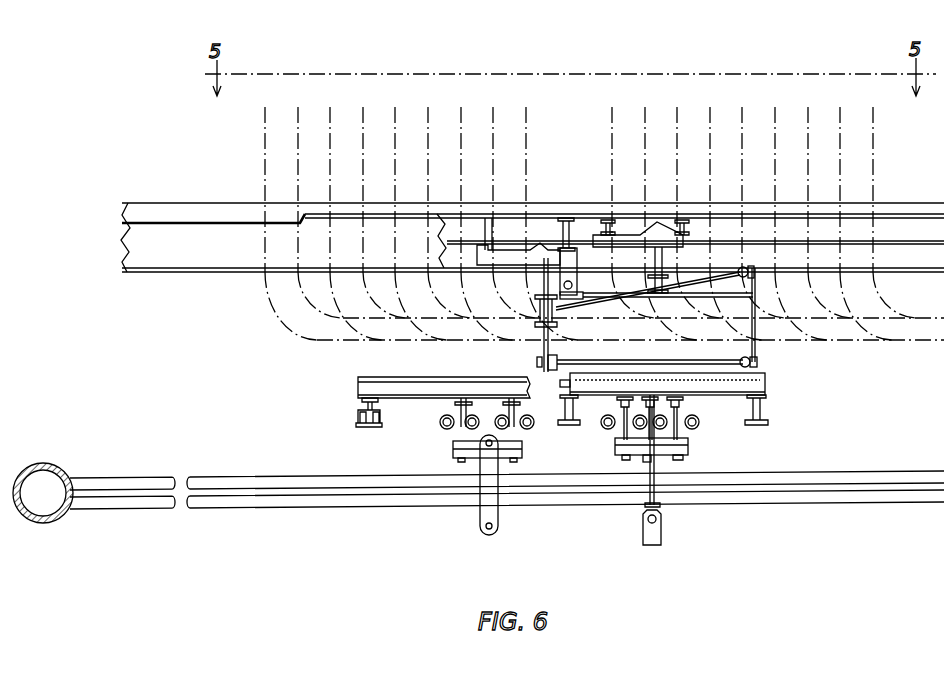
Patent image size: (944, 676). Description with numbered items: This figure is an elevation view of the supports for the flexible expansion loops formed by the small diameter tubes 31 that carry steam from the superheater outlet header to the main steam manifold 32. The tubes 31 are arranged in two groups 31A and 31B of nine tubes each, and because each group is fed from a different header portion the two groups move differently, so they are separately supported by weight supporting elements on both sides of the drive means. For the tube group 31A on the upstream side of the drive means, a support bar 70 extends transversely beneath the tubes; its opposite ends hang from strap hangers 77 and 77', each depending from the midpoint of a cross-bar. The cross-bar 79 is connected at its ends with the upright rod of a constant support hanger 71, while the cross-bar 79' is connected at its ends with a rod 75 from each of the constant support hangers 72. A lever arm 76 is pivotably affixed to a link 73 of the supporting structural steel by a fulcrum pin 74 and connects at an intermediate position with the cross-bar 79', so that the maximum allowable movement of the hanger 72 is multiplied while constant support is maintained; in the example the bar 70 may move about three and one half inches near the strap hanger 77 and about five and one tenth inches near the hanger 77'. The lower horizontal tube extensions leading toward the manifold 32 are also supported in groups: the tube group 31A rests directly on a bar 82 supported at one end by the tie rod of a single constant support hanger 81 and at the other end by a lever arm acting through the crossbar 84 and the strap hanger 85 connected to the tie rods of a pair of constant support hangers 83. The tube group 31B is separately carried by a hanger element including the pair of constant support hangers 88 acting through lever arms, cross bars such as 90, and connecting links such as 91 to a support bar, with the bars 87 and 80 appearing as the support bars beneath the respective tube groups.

The tubes 31 is at (147, 510).
The tube group 31A is at (255, 104).
The tube group 31B is at (885, 107).
The main steam manifold 32 is at (68, 470).
The support bar 70 is at (637, 358).
The constant support hanger 71 is at (486, 265).
The constant support hangers 72 is at (679, 240).
The link 73 is at (577, 263).
The fulcrum pin 74 is at (583, 298).
The rod 75 is at (655, 260).
The lever arm 76 is at (722, 287).
The strap hanger 77 is at (528, 358).
The strap hanger 77' is at (768, 353).
The cross-bar 79 is at (637, 315).
The cross-bar 79' is at (760, 262).
The slide bar 80 is at (764, 383).
The constant support hanger 81 is at (665, 463).
The bar 82 is at (662, 528).
The constant support hangers 83 is at (609, 429).
The crossbar 84 is at (690, 447).
The strap hanger 85 is at (642, 463).
The slide bar 87 is at (360, 390).
The constant support hangers 88 is at (442, 428).
The cross bar 90 is at (524, 452).
The connecting link 91 is at (500, 521).